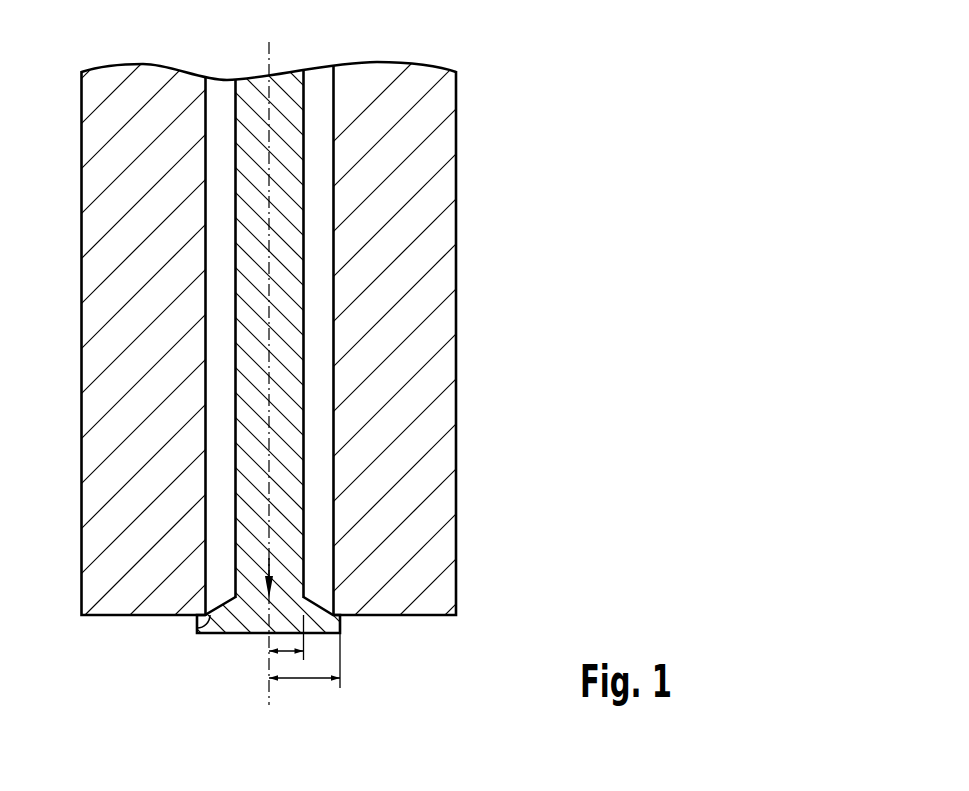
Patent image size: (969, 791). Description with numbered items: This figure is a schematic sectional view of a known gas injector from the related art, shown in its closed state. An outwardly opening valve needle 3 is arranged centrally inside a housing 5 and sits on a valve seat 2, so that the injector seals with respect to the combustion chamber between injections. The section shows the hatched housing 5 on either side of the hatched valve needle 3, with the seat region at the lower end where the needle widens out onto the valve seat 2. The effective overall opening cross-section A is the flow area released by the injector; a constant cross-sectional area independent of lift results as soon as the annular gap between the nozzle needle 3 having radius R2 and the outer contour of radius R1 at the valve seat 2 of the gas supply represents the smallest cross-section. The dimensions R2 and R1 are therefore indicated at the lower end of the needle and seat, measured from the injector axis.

The housing 5 is at (423, 117).
The valve needle 3 is at (290, 185).
The valve seat 2 is at (211, 628).
The effective overall opening cross-section A is at (270, 558).
The outer contour radius at the valve seat R1 is at (304, 672).
The nozzle needle radius R2 is at (270, 662).